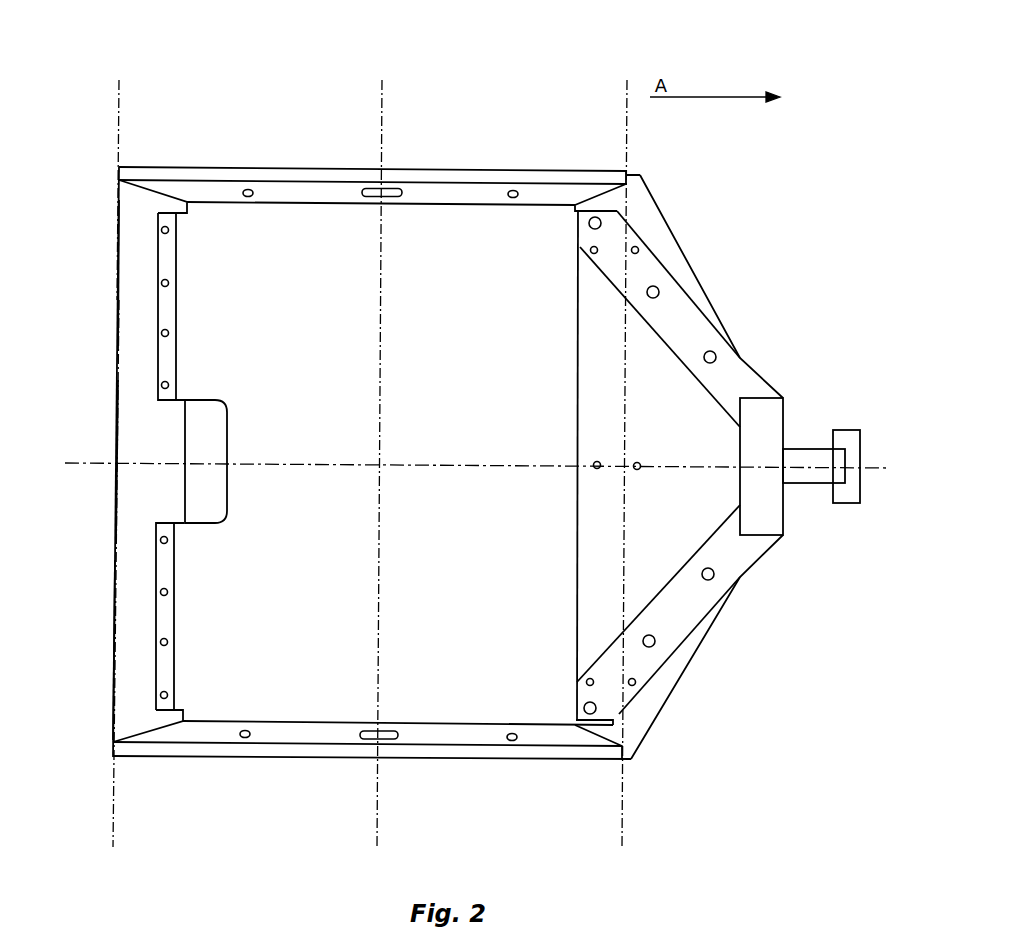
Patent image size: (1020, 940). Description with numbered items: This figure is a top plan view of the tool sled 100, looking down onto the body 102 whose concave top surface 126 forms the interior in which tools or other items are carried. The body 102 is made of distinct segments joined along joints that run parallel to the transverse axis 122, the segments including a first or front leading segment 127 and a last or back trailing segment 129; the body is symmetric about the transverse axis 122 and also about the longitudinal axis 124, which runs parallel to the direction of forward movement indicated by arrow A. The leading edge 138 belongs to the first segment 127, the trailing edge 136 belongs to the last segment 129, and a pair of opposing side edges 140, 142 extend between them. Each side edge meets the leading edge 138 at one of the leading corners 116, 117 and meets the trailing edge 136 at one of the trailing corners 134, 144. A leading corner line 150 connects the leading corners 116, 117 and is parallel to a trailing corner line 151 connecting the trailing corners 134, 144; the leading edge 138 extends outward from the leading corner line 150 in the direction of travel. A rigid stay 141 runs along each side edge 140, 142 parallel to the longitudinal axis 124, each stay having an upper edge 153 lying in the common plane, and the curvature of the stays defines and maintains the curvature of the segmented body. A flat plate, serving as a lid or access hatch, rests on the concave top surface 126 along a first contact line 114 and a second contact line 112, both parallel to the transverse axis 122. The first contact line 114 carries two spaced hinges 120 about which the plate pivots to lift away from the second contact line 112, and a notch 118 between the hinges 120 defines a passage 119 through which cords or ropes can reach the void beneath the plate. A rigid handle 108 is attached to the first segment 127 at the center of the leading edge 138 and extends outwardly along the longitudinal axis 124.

The tool sled 100 is at (105, 34).
The body 102 is at (117, 310).
The rigid handle 108 is at (805, 449).
The second contact line 112 is at (580, 550).
The first contact line 114 is at (140, 653).
The leading corner 116 is at (628, 172).
The leading corner 117 is at (622, 760).
The notch 118 is at (227, 497).
The passage 119 is at (215, 425).
The hinge 120 is at (165, 352).
The transverse axis 122 is at (382, 98).
The longitudinal axis 124 is at (876, 468).
The concave top surface 126 is at (608, 385).
The first segment 127 is at (682, 680).
The last segment 129 is at (138, 277).
The trailing corner 134 is at (113, 757).
The trailing edge 136 is at (117, 445).
The leading edge 138 is at (700, 262).
The side edge 140 is at (333, 167).
The rigid stay 141 is at (190, 192).
The side edge 142 is at (315, 757).
The trailing corner 144 is at (119, 167).
The leading corner line 150 is at (627, 503).
The trailing corner line 151 is at (113, 825).
The upper edge 153 is at (250, 180).